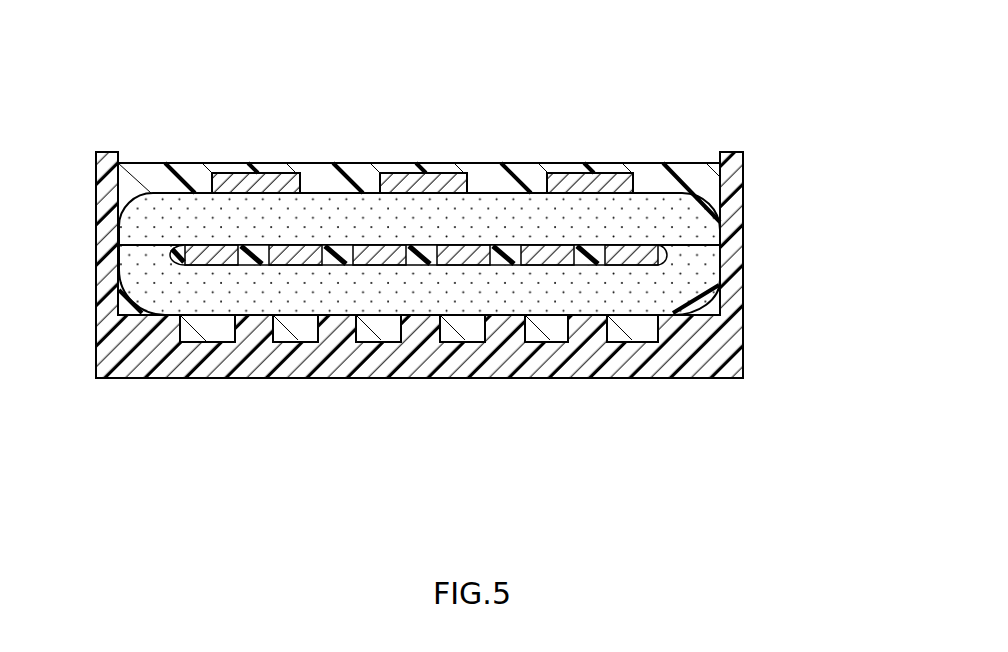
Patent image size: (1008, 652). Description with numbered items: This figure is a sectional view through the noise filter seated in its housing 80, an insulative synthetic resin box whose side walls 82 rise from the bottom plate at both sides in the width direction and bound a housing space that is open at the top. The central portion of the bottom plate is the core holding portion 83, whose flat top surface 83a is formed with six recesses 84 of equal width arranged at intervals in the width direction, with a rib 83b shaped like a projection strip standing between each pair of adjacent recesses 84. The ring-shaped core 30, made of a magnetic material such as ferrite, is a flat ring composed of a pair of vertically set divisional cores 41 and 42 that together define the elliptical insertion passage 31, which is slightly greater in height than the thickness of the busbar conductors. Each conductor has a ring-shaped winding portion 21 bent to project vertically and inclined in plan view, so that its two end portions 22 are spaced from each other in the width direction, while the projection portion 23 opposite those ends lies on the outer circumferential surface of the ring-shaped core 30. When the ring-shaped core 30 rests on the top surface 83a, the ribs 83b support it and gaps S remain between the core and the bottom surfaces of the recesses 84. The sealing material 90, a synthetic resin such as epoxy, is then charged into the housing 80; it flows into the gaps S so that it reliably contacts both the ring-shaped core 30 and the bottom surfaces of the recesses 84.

The housing 80 is at (748, 333).
The side walls 82 is at (97, 184).
The sealing material 90 is at (147, 185).
The ring-shaped core 30 is at (492, 254).
The divisional core 41 is at (698, 223).
The divisional core 42 is at (698, 272).
The insertion passage 31 is at (335, 247).
The winding portion 21 is at (423, 155).
The end portions 22 is at (300, 247).
The projection portion 23 is at (590, 183).
The core holding portion 83 is at (418, 346).
The top surface 83a is at (134, 314).
The rib 83b is at (255, 317).
The recesses 84 is at (197, 332).
The gaps S is at (191, 339).